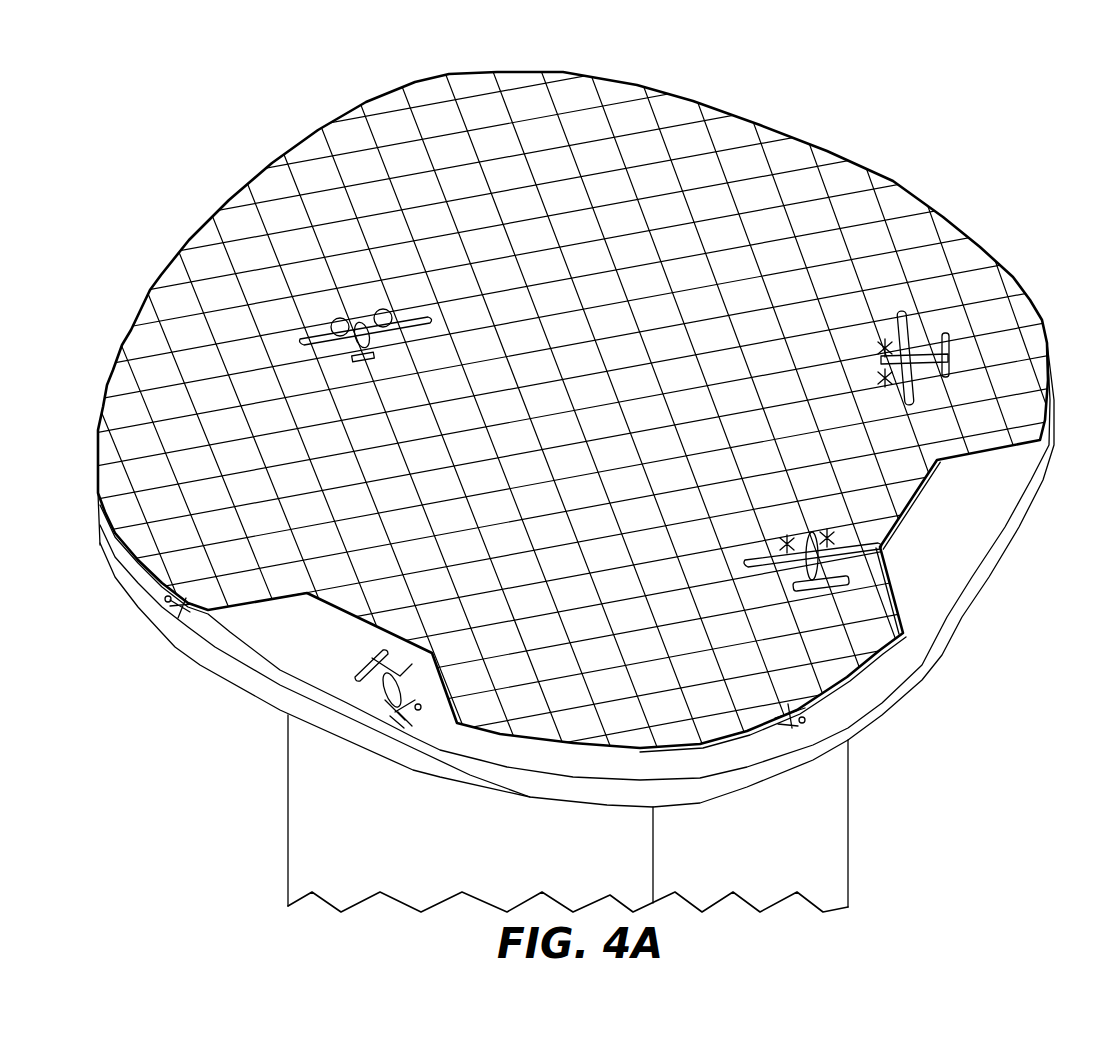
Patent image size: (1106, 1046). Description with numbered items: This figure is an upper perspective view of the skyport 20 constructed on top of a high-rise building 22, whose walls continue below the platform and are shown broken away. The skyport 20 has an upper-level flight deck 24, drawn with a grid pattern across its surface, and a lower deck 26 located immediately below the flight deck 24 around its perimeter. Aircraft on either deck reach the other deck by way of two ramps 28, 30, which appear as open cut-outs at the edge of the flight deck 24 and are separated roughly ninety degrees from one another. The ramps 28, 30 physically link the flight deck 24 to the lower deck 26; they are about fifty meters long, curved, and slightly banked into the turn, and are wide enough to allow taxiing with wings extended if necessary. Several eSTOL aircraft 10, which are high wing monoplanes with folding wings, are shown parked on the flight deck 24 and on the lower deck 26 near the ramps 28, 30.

The skyport 20 is at (270, 90).
The high-rise building 22 is at (850, 792).
The upper-level flight deck 24 is at (245, 207).
The lower deck 26 is at (158, 581).
The ramp 28 is at (280, 647).
The ramp 30 is at (1003, 490).
The eSTOL aircraft 10 is at (930, 352).